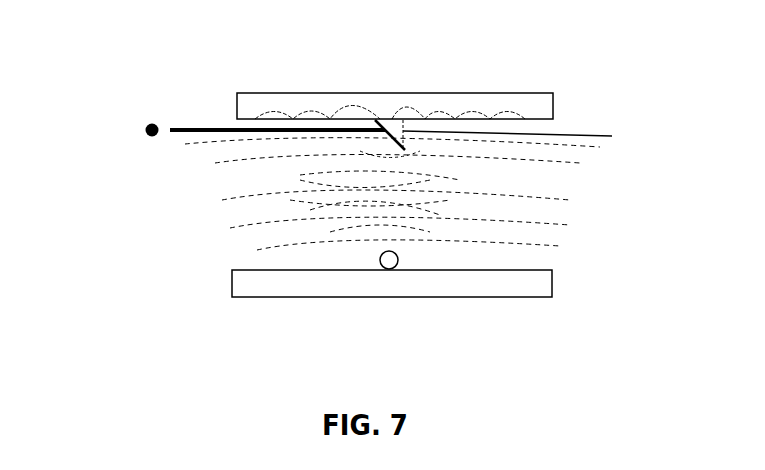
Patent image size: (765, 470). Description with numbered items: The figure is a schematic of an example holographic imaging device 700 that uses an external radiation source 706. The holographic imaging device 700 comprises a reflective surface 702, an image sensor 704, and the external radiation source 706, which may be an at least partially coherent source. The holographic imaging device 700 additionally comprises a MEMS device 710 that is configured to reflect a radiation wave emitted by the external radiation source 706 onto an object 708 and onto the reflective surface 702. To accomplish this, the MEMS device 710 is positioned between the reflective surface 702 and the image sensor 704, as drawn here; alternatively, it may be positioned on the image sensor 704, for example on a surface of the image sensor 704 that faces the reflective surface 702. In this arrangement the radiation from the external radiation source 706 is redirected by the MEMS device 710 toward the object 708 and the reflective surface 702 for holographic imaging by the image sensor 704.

The holographic imaging device 700 is at (232, 47).
The reflective surface 702 is at (458, 297).
The image sensor 704 is at (510, 92).
The external radiation source 706 is at (147, 127).
The object 708 is at (398, 259).
The MEMS device 710 is at (511, 139).